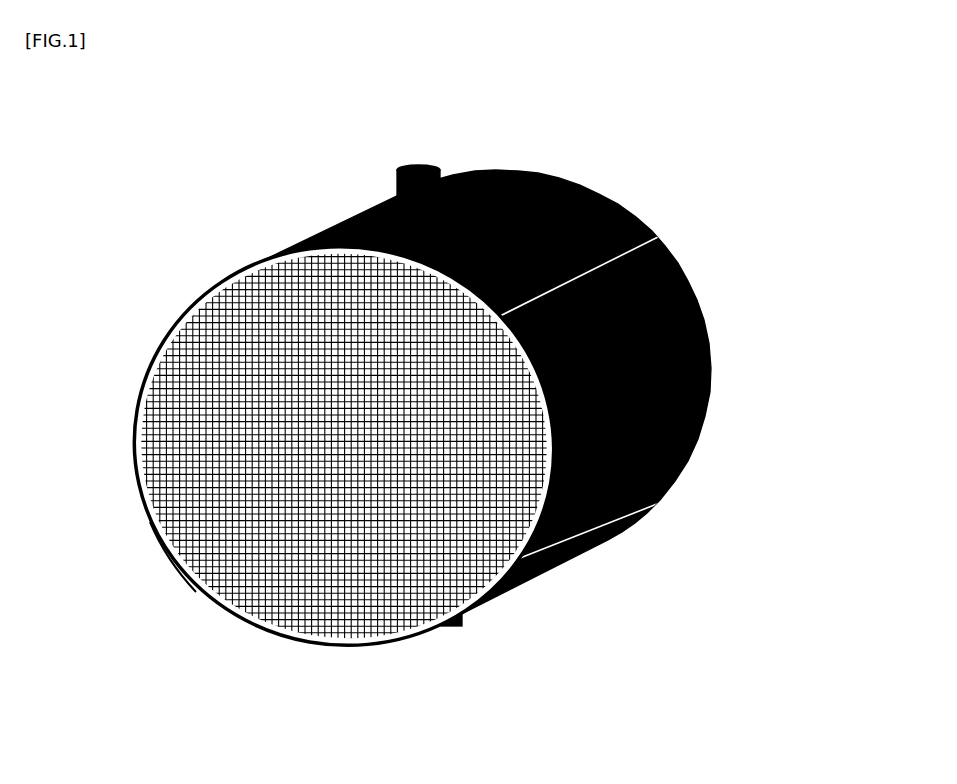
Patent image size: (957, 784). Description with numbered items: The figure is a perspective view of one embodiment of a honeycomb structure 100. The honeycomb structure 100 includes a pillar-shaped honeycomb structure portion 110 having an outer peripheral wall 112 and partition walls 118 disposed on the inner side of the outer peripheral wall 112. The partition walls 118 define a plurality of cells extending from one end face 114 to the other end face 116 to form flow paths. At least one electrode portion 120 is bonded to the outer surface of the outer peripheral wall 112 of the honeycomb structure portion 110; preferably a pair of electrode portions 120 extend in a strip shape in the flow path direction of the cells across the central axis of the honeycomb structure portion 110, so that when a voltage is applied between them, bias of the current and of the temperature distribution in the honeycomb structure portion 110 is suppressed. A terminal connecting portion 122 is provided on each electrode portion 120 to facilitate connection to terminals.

The honeycomb structure 100 is at (346, 169).
The pillar-shaped honeycomb structure portion 110 is at (137, 357).
The outer peripheral wall 112 is at (707, 398).
The one end face 114 is at (173, 570).
The other end face 116 is at (700, 293).
The partition walls 118 is at (190, 534).
The electrode portion 120 is at (528, 190).
The terminal connecting portion 122 is at (414, 167).